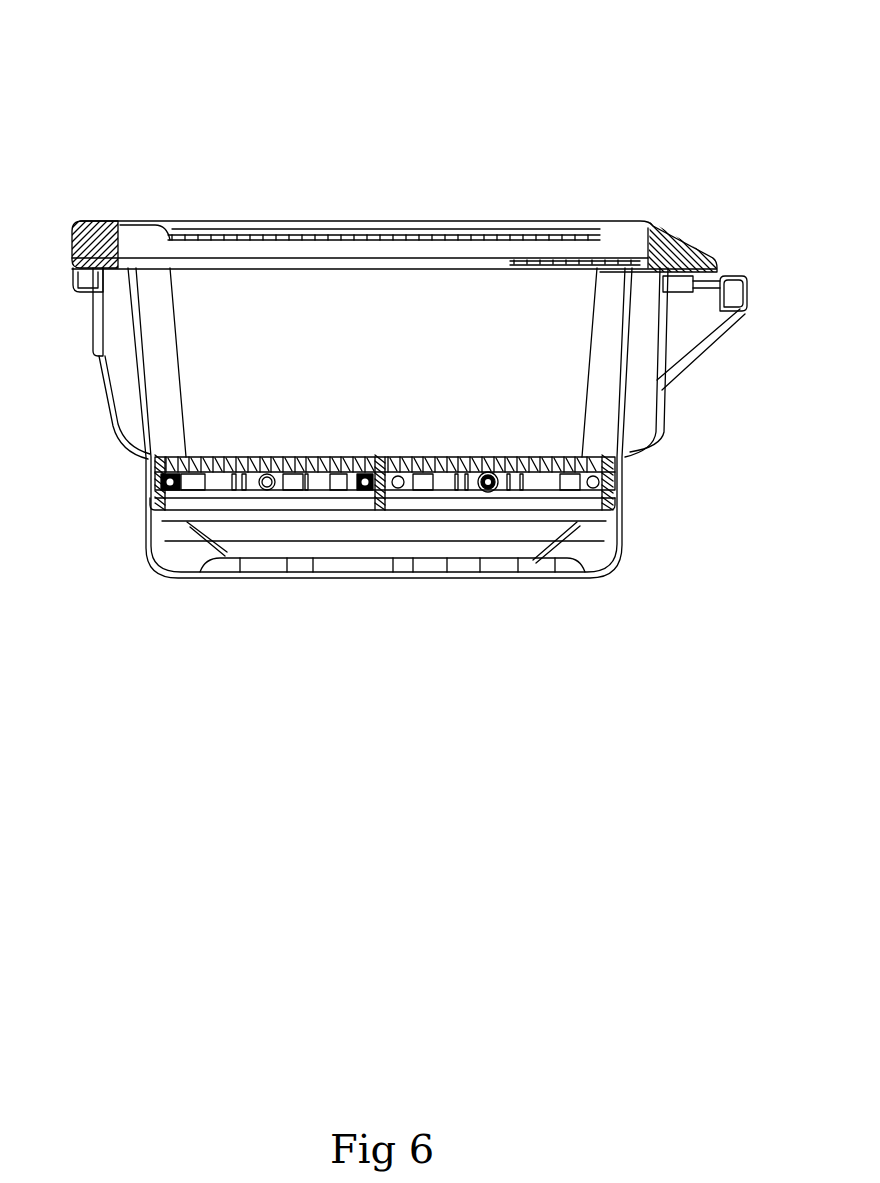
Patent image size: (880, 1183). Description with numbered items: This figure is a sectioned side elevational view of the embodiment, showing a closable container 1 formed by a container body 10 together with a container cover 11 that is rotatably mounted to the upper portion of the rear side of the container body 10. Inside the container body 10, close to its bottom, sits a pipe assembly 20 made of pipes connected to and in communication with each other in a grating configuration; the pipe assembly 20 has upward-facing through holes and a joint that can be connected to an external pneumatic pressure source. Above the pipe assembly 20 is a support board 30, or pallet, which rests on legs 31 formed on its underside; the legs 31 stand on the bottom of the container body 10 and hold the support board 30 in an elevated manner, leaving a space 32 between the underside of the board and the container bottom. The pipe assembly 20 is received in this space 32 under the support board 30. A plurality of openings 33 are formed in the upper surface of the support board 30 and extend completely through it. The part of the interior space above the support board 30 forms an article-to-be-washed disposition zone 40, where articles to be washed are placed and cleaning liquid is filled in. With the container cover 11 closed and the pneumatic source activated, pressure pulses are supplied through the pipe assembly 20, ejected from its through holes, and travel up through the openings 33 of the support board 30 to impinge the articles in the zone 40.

The closable container 1 is at (515, 163).
The container body 10 is at (307, 580).
The container cover 11 is at (238, 227).
The pipe assembly 20 is at (478, 488).
The support board 30 is at (250, 470).
The legs 31 is at (388, 510).
The space 32 is at (360, 507).
The openings 33 is at (222, 477).
The article-to-be-washed disposition zone 40 is at (418, 378).